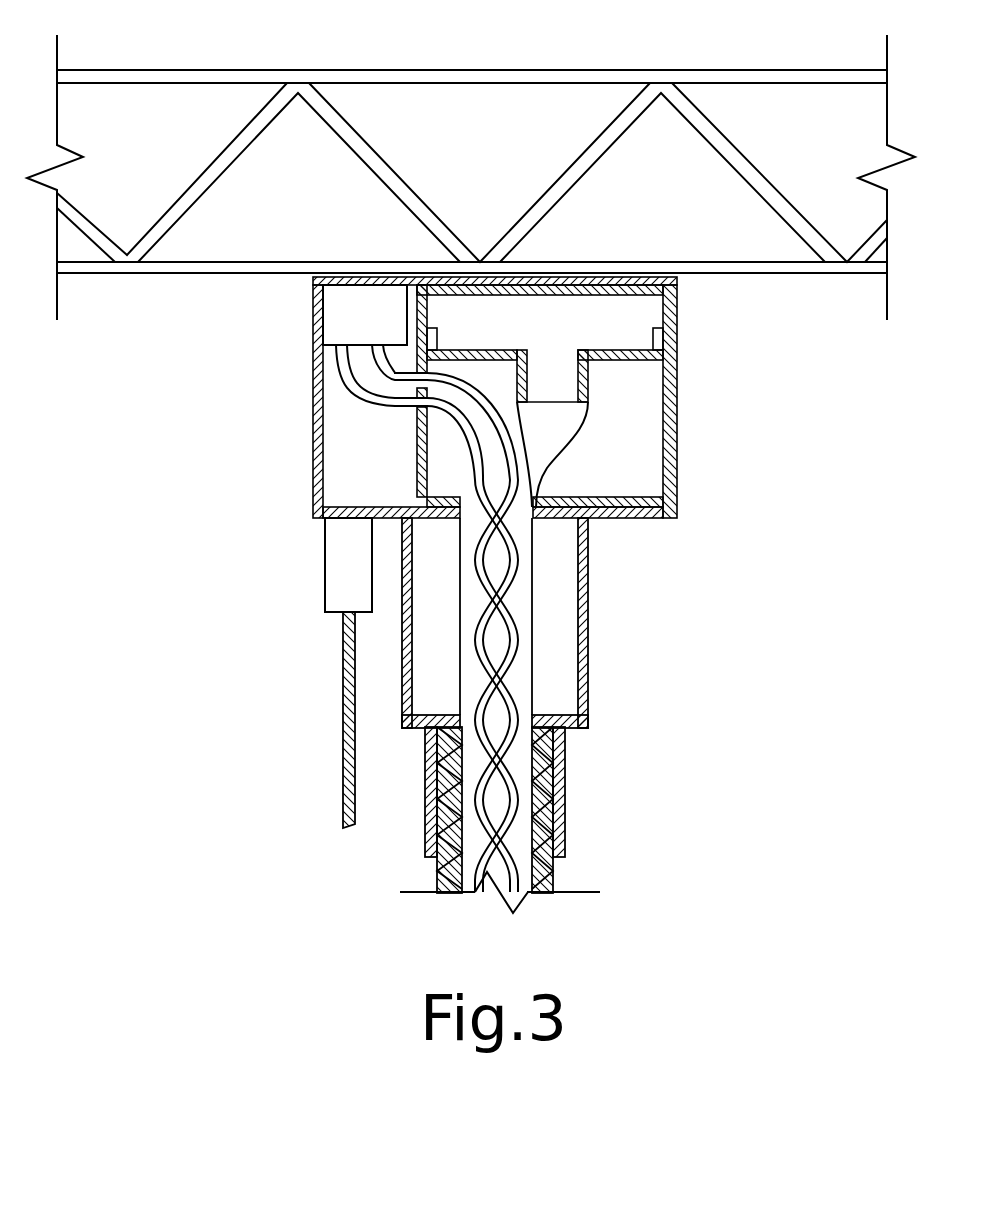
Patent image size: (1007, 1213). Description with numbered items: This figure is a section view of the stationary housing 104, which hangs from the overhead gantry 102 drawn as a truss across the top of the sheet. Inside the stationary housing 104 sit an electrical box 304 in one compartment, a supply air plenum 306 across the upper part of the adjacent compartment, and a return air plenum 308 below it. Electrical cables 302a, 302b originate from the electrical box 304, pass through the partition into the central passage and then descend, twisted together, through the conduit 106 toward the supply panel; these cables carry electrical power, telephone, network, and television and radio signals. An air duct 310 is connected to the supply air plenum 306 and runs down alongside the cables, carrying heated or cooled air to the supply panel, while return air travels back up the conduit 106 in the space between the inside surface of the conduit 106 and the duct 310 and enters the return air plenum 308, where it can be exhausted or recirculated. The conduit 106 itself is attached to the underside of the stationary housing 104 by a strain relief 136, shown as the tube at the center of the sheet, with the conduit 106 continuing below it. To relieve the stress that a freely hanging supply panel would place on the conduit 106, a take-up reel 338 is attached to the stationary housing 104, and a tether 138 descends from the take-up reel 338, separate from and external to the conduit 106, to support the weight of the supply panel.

The overhead gantry 102 is at (520, 68).
The stationary housing 104 is at (680, 383).
The conduit 106 is at (548, 882).
The strain relief 136 is at (588, 593).
The tether 138 is at (343, 683).
The electrical cable 302a is at (343, 388).
The electrical cable 302b is at (380, 423).
The electrical box 304 is at (313, 370).
The supply air plenum 306 is at (568, 340).
The return air plenum 308 is at (637, 448).
The air duct 310 is at (567, 440).
The take-up reel 338 is at (325, 563).